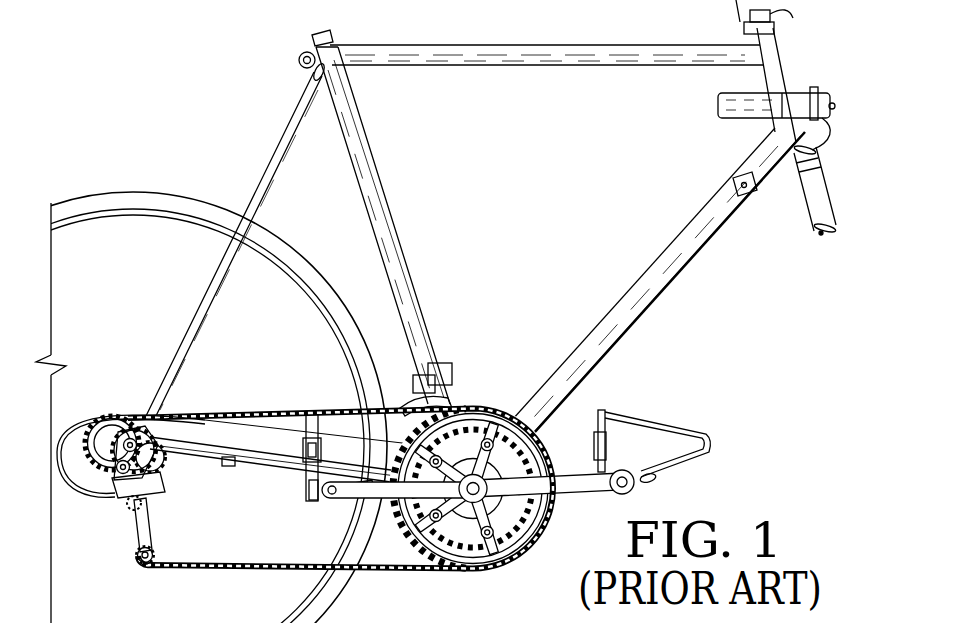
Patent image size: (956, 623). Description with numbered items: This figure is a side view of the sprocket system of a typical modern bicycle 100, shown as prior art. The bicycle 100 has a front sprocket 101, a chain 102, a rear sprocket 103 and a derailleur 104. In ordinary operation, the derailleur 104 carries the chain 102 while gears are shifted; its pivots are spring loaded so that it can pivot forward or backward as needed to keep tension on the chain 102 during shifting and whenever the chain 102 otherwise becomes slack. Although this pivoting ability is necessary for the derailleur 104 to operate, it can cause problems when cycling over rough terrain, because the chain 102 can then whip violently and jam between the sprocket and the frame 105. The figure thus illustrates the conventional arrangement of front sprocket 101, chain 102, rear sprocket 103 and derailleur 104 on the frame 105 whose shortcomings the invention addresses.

The bicycle 100 is at (668, 335).
The front sprocket 101 is at (534, 534).
The chain 102 is at (205, 572).
The rear sprocket 103 is at (128, 404).
The derailleur 104 is at (137, 514).
The frame 105 is at (262, 462).